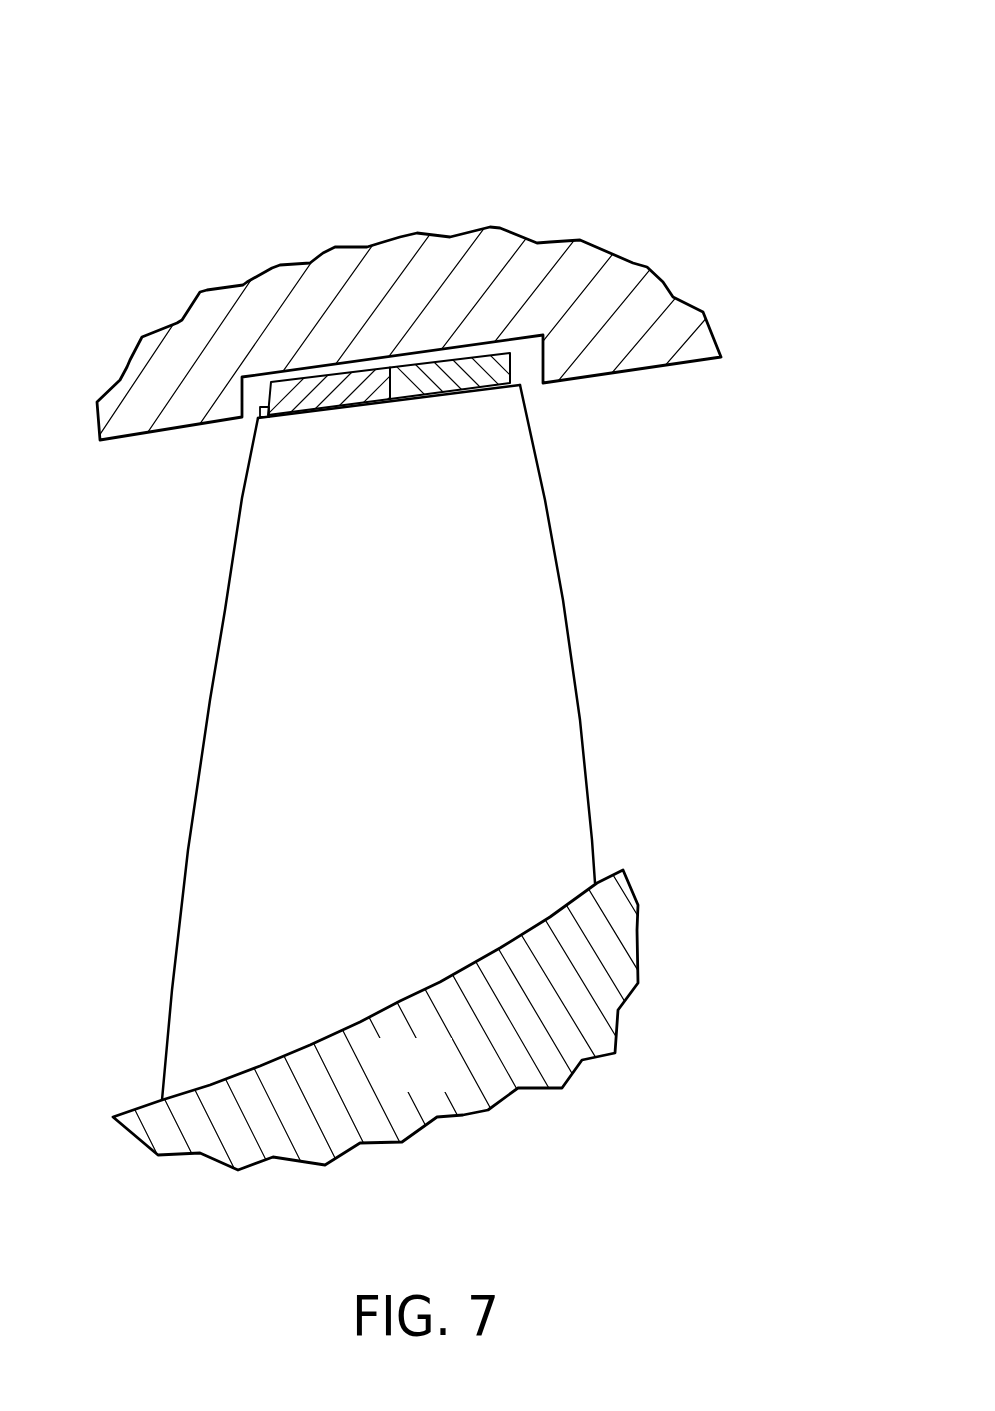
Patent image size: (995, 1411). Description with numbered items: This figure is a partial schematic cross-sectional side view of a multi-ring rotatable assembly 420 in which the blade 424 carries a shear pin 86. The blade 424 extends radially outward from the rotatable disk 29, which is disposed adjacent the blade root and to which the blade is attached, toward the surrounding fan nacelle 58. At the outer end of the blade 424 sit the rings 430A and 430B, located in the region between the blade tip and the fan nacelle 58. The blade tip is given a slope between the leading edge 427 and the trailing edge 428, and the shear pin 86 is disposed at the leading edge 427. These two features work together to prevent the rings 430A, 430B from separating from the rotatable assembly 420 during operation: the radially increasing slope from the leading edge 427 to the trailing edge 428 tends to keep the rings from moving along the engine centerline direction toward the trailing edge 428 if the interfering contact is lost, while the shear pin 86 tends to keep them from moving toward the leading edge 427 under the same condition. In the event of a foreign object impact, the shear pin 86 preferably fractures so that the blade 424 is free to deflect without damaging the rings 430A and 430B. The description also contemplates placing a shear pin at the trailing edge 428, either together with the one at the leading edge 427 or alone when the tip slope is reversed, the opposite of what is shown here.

The multi-ring rotatable assembly 420 is at (602, 145).
The fan nacelle 58 is at (657, 297).
The shear pin 86 is at (238, 421).
The ring 430A is at (317, 407).
The ring 430B is at (453, 390).
The blade 424 is at (411, 790).
The leading edge 427 is at (198, 758).
The trailing edge 428 is at (575, 682).
The rotatable disk 29 is at (438, 1081).